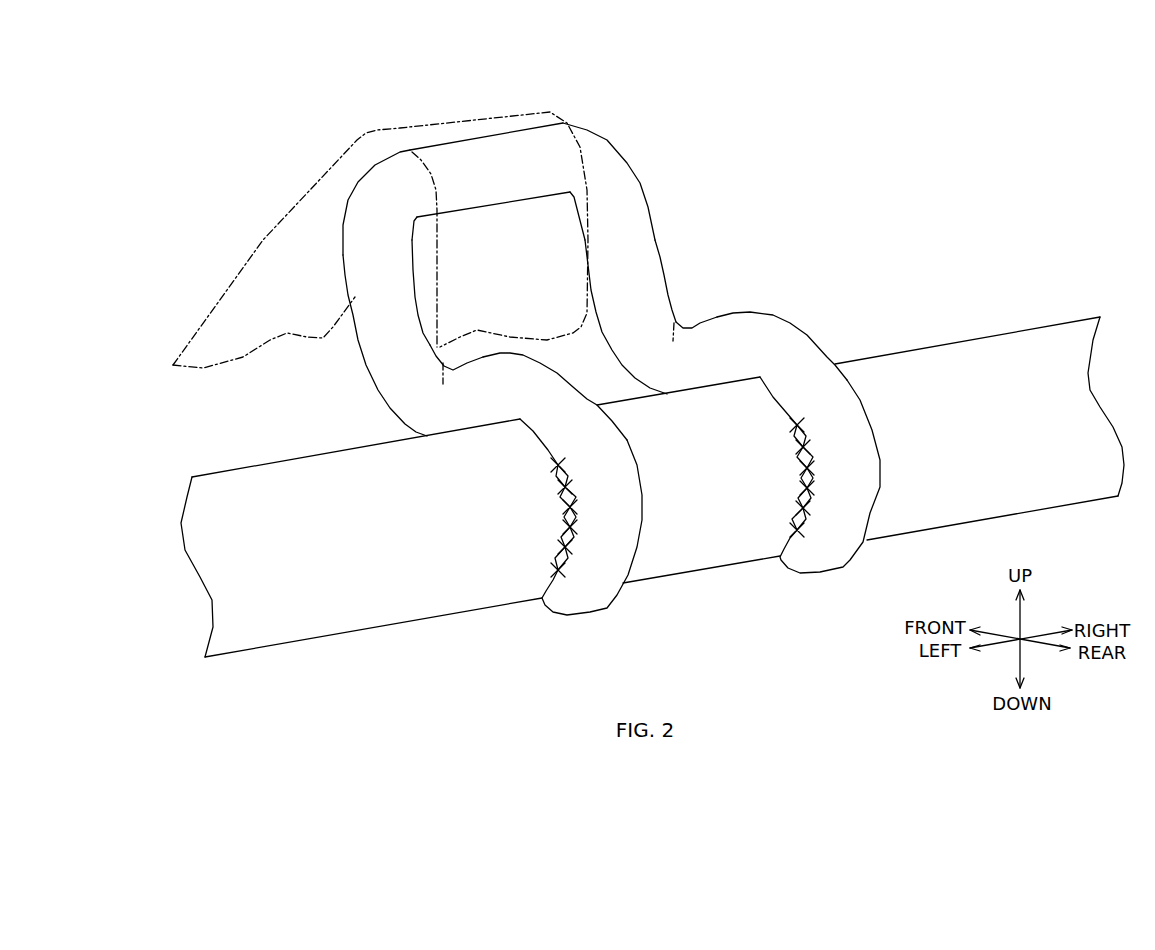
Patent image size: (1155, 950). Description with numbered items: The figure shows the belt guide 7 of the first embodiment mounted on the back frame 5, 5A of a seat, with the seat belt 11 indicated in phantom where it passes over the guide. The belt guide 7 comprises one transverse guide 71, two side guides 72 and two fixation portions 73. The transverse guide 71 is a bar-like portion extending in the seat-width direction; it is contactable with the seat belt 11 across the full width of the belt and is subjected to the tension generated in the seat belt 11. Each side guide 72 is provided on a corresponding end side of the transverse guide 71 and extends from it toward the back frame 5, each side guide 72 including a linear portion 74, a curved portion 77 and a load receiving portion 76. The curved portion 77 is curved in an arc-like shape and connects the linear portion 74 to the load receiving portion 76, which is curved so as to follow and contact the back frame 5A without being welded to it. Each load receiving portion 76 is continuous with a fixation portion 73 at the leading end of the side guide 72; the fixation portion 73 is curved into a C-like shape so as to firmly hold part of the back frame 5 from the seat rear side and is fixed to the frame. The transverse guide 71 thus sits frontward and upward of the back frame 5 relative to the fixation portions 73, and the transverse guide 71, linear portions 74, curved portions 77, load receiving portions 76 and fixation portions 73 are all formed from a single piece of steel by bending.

The back frame 5 is at (652, 452).
The back frame 5A is at (968, 340).
The belt guide 7 is at (660, 142).
The seat belt 11 is at (277, 222).
The transverse guide 71 is at (468, 140).
The side guide 72 is at (660, 263).
The fixation portion 73 is at (630, 533).
The linear portion 74 is at (638, 225).
The load receiving portion 76 is at (755, 335).
The curved portion 77 is at (677, 324).